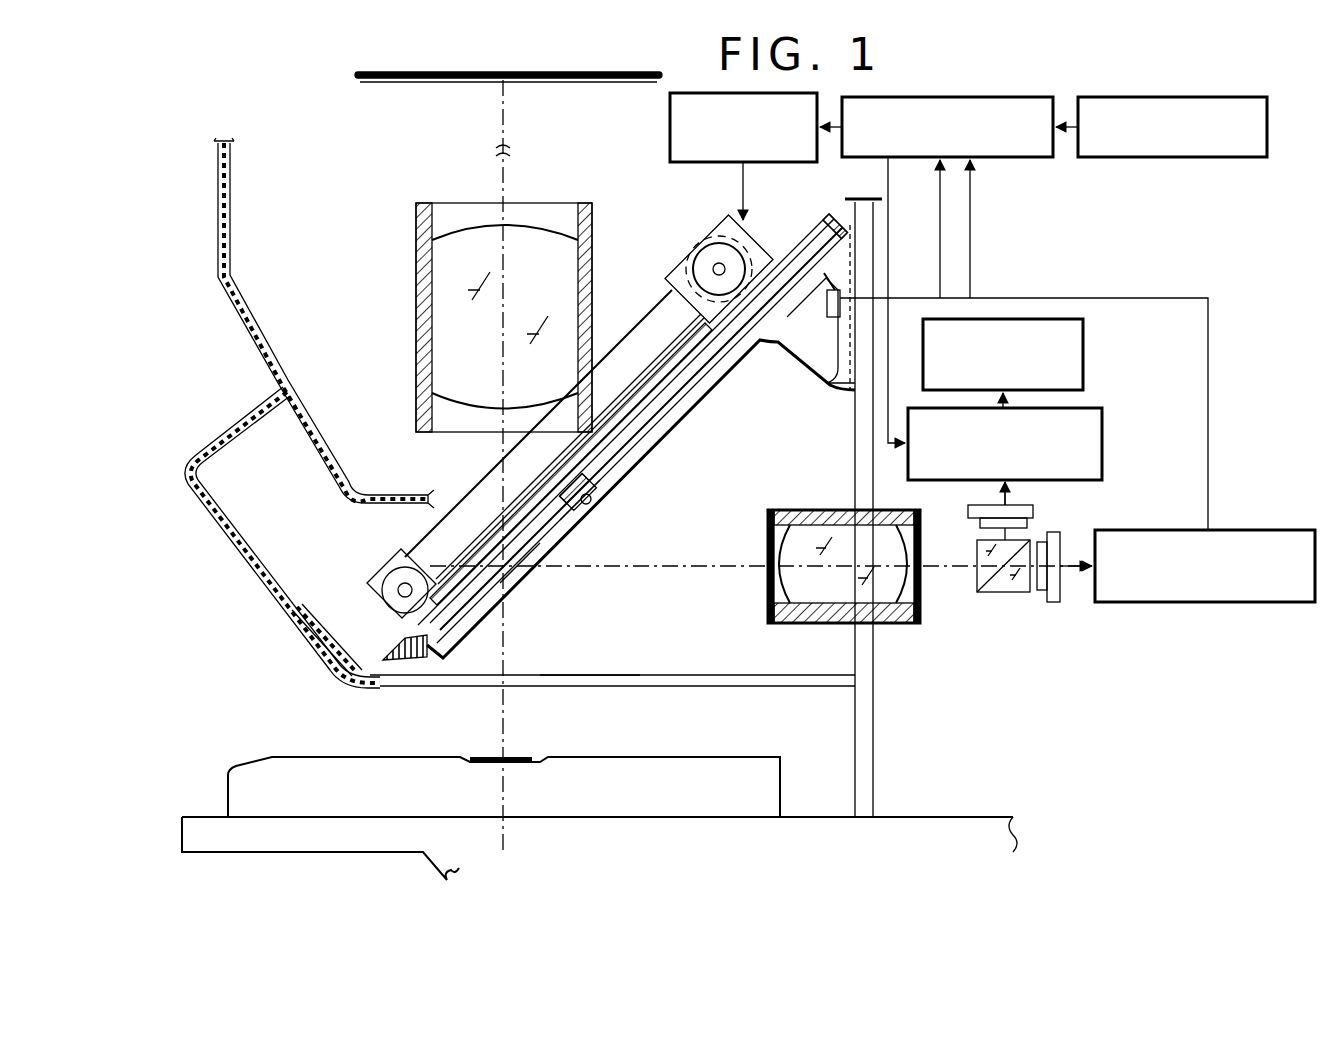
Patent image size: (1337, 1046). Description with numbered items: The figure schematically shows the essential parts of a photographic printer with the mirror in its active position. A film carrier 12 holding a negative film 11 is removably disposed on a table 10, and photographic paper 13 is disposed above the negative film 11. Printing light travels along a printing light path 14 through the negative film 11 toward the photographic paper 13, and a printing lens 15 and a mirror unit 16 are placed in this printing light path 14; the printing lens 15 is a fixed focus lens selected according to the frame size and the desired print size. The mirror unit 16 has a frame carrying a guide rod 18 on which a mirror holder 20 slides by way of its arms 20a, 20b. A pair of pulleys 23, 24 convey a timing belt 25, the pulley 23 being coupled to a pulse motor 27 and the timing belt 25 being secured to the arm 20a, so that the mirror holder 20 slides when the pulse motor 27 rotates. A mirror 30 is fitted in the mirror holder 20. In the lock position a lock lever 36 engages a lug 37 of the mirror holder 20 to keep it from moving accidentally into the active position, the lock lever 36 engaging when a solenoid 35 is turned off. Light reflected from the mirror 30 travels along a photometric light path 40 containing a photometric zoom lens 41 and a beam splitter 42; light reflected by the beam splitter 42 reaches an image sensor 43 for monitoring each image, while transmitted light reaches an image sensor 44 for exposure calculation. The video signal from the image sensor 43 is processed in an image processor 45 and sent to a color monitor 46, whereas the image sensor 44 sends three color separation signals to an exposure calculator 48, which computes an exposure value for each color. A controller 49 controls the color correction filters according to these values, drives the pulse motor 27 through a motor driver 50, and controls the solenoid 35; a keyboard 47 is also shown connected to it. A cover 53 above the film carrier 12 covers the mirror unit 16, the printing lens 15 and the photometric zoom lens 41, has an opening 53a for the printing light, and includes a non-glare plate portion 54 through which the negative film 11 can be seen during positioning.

The table 10 is at (206, 816).
The negative film 11 is at (522, 757).
The film carrier 12 is at (266, 760).
The photographic paper 13 is at (388, 84).
The printing light path 14 is at (500, 706).
The printing lens 15 is at (432, 288).
The mirror unit 16 is at (708, 398).
The guide rod 18 is at (650, 412).
The mirror holder 20 is at (395, 646).
The arm 20a is at (535, 576).
The arm 20b is at (592, 520).
The pulley 23 is at (716, 258).
The pulley 24 is at (384, 574).
The timing belt 25 is at (632, 322).
The pulse motor 27 is at (690, 246).
The mirror 30 is at (462, 555).
The solenoid 35 is at (835, 330).
The lock lever 36 is at (824, 222).
The lug 37 is at (600, 498).
The photometric light path 40 is at (696, 572).
The photometric zoom lens 41 is at (822, 600).
The beam splitter 42 is at (1004, 594).
The image sensor 43 is at (968, 510).
The image sensor 44 is at (1052, 603).
The image processor 45 is at (1104, 448).
The color monitor 46 is at (1085, 360).
The keyboard 47 is at (1142, 158).
The exposure calculator 48 is at (1165, 603).
The controller 49 is at (1000, 158).
The motor driver 50 is at (670, 126).
The cover 53 is at (735, 687).
The opening 53a is at (572, 674).
The non-glare plate portion 54 is at (246, 570).